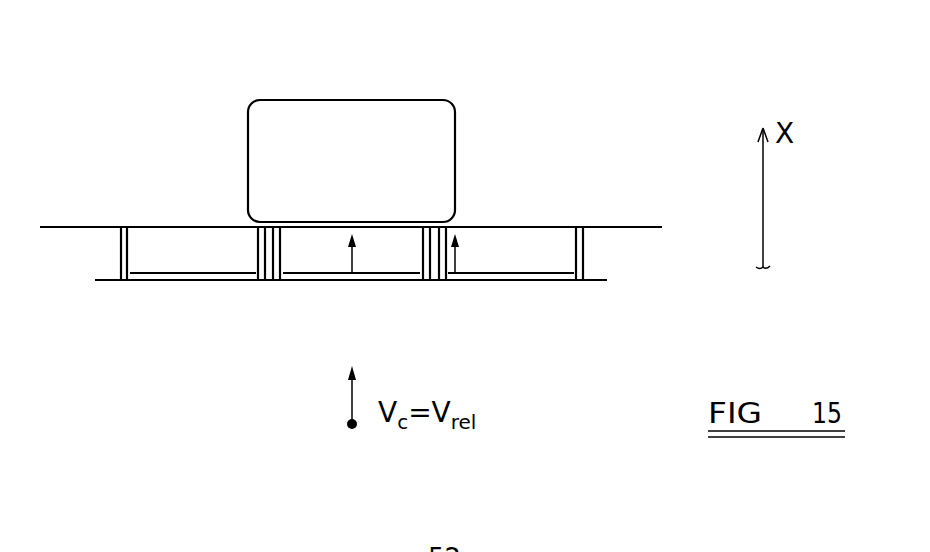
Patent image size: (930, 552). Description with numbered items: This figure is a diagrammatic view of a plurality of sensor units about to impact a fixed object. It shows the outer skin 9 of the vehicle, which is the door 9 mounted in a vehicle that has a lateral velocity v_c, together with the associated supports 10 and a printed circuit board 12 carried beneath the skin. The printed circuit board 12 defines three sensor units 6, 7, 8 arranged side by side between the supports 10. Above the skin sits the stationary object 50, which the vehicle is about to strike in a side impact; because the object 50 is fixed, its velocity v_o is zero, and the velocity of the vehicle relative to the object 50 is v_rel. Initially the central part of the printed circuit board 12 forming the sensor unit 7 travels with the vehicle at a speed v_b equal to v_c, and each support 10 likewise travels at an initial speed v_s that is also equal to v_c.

The stationary object 50 is at (398, 100).
The outer skin 9 is at (622, 227).
The support 10 is at (585, 265).
The printed circuit board 12 is at (108, 281).
The sensor unit 8 is at (223, 281).
The sensor unit 7 is at (333, 281).
The sensor unit 6 is at (518, 283).